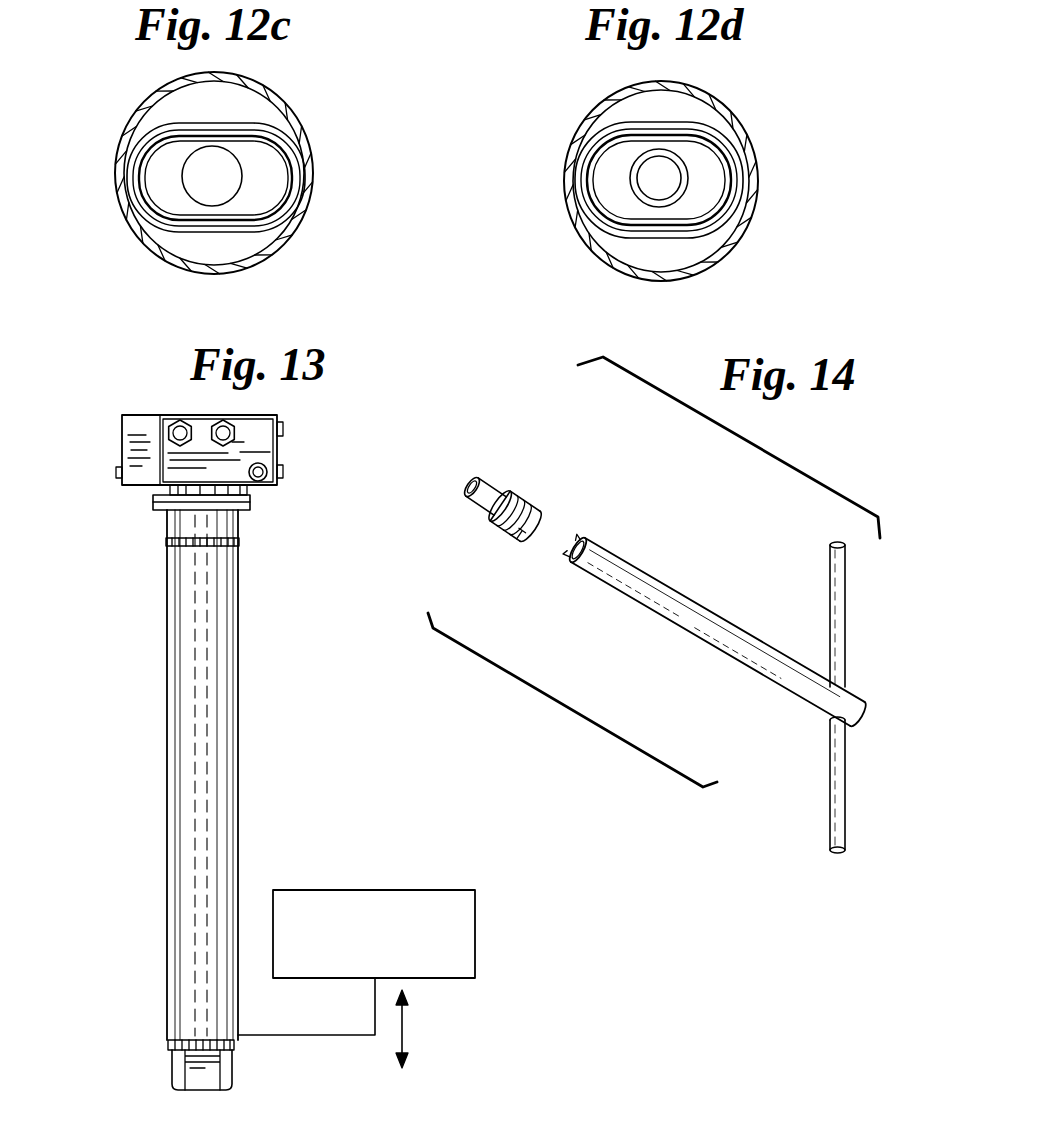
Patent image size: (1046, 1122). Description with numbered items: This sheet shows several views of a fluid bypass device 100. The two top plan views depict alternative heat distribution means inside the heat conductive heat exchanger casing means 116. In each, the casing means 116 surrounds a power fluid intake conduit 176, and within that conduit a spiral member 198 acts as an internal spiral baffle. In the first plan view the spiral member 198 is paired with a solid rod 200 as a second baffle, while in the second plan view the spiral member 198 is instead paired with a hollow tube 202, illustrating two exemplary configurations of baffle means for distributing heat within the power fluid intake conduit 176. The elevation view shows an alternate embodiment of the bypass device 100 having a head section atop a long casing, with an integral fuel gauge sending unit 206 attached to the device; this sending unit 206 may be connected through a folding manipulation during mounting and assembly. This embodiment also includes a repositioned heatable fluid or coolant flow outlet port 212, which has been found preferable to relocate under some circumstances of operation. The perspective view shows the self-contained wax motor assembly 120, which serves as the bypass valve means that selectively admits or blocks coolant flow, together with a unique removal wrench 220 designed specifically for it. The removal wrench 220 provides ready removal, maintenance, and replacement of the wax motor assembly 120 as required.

In FIG. 12c, the heat exchanger casing means 116 is at (267, 93).
In FIG. 12d, the heat exchanger casing means 116 is at (728, 253).
In FIG. 12c, the power fluid intake conduit 176 is at (253, 231).
In FIG. 12d, the power fluid intake conduit 176 is at (597, 138).
In FIG. 12c, the spiral member 198 is at (282, 186).
In FIG. 12d, the spiral member 198 is at (578, 172).
In FIG. 12c, the rod 200 is at (182, 178).
In FIG. 12d, the hollow tube 202 is at (642, 198).
In FIG. 13, the bypass device 100 is at (158, 683).
In FIG. 13, the coolant flow outlet port 212 is at (270, 472).
In FIG. 13, the fuel gauge sending unit 206 is at (465, 890).
In FIG. 14, the self-contained wax motor assembly 120 is at (492, 490).
In FIG. 14, the removal wrench 220 is at (653, 590).